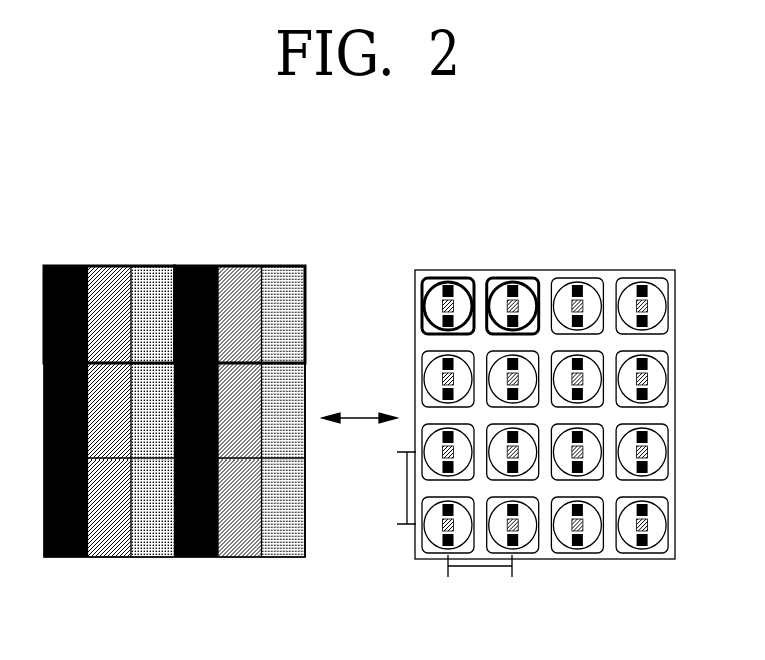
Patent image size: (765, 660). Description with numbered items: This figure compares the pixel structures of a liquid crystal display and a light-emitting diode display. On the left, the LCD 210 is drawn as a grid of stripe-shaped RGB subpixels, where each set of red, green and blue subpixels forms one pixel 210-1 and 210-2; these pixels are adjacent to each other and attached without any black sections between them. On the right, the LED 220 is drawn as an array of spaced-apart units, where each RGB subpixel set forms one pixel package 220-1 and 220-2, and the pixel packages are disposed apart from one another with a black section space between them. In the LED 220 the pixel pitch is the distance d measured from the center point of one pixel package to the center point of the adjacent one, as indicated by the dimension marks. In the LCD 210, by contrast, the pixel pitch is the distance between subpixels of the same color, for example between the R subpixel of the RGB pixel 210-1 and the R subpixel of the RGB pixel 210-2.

The LCD 210 is at (174, 418).
The pixel 210-1 is at (112, 272).
The pixel 210-2 is at (240, 272).
The LED 220 is at (532, 421).
The pixel package 220-1 is at (445, 277).
The pixel package 220-2 is at (508, 277).